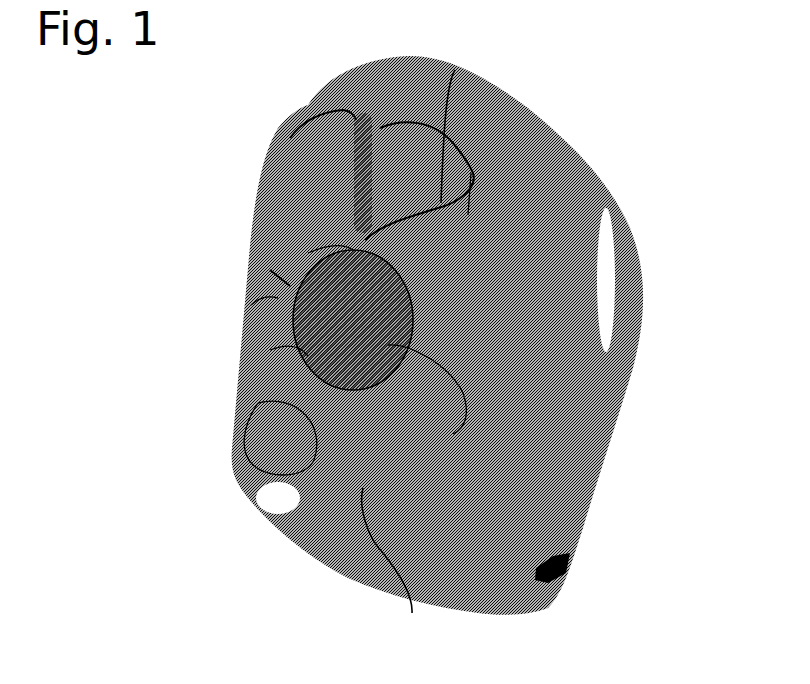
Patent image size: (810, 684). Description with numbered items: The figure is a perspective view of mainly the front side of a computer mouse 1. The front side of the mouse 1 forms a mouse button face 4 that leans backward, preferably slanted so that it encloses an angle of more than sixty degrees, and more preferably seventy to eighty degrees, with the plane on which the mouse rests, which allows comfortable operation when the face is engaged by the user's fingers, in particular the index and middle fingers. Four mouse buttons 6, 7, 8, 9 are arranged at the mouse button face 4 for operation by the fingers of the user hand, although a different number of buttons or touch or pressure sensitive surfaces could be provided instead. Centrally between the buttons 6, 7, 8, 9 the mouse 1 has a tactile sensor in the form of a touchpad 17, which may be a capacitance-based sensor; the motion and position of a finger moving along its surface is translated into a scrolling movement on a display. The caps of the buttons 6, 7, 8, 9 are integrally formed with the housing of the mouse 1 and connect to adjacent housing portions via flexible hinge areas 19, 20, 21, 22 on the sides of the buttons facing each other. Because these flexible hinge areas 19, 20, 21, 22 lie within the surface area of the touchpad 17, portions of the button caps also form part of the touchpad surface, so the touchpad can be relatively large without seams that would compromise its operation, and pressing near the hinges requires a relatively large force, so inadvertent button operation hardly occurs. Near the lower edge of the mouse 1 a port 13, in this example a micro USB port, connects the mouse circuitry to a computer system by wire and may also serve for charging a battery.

The computer mouse 1 is at (660, 177).
The mouse button face 4 is at (285, 372).
The mouse button 6 is at (293, 162).
The mouse button 7 is at (465, 165).
The mouse button 8 is at (270, 330).
The mouse button 9 is at (404, 605).
The port 13 is at (562, 548).
The touchpad 17 is at (265, 262).
The flexible hinge area 19 is at (327, 236).
The flexible hinge area 20 is at (447, 62).
The flexible hinge area 21 is at (282, 380).
The flexible hinge area 22 is at (380, 378).